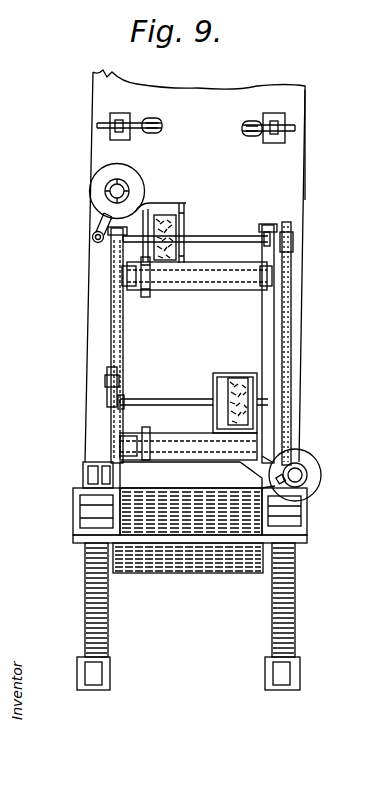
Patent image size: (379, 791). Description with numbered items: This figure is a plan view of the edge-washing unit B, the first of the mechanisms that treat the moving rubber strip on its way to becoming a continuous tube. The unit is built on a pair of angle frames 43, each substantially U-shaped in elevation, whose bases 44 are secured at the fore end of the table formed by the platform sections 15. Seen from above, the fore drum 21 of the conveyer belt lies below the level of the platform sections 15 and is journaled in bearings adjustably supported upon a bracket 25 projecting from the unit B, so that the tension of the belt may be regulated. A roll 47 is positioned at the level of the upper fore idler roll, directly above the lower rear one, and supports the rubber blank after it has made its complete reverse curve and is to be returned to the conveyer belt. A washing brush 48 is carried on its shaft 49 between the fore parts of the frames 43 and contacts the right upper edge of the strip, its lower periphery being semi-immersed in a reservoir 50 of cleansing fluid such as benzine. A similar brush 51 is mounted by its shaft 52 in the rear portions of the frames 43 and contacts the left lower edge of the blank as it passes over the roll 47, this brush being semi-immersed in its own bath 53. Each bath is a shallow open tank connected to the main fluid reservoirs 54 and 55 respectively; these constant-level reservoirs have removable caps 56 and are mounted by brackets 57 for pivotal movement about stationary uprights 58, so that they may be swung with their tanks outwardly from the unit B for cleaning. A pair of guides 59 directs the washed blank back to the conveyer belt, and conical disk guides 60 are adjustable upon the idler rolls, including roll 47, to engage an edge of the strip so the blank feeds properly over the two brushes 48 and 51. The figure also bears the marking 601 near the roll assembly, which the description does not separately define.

The platform sections 15 is at (293, 198).
The fore drum 21 is at (212, 570).
The bracket 25 is at (108, 612).
The angle frames 43 is at (112, 295).
The bases 44 is at (292, 250).
The roll 47 is at (197, 266).
The washing brush 48 is at (243, 373).
The shaft 49 is at (168, 403).
The reservoir 50 is at (248, 376).
The brush 51 is at (166, 215).
The shaft 52 is at (196, 241).
The bath 53 is at (185, 212).
The main fluid reservoir 54 is at (322, 462).
The main fluid reservoir 55 is at (84, 193).
The removable caps 56 is at (98, 198).
The brackets 57 is at (92, 228).
The stationary uprights 58 is at (92, 238).
The guides 59 is at (245, 127).
The conical disk guides 60 is at (151, 433).
The bracket 601 is at (147, 292).
The edge-washing unit B is at (193, 308).